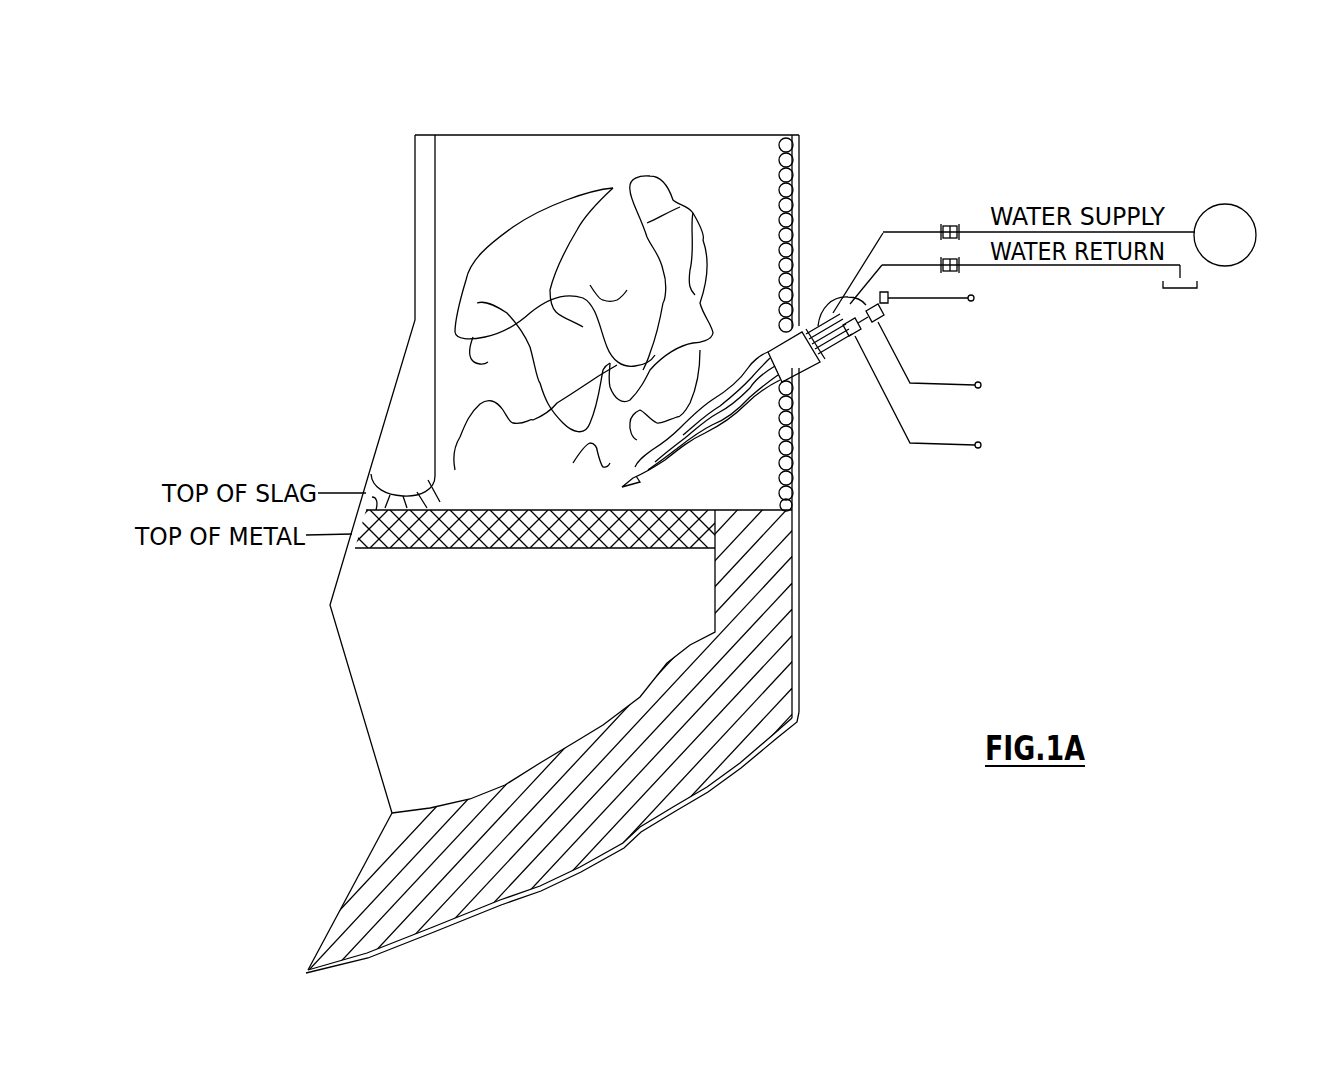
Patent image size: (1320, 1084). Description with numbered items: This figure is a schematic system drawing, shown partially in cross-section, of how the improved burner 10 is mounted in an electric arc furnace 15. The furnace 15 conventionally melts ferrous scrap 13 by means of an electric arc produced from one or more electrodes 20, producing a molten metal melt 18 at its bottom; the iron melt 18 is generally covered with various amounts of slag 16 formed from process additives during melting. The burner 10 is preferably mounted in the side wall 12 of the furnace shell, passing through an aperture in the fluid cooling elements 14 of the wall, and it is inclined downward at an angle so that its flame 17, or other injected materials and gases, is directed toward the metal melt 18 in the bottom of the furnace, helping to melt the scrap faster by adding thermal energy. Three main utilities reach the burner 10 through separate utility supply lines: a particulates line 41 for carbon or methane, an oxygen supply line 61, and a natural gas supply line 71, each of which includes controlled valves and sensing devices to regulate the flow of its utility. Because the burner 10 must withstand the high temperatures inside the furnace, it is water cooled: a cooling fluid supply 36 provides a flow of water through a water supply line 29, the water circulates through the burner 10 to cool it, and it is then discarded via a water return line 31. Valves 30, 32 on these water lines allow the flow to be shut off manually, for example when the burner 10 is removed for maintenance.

The burner 10 is at (816, 382).
The side wall 12 is at (782, 558).
The ferrous scrap 13 is at (621, 275).
The fluid cooling elements 14 is at (797, 440).
The electric arc furnace 15 is at (815, 185).
The slag 16 is at (666, 510).
The flame 17 is at (728, 408).
The molten metal melt 18 is at (652, 617).
The electrode 20 is at (436, 229).
The water supply line 29 is at (883, 231).
The valve 30 is at (945, 226).
The water return line 31 is at (880, 263).
The valve 32 is at (940, 271).
The cooling fluid supply 36 is at (1244, 210).
The utility supply line 41 is at (912, 299).
The oxygen supply line 61 is at (893, 348).
The natural gas supply line 71 is at (893, 412).